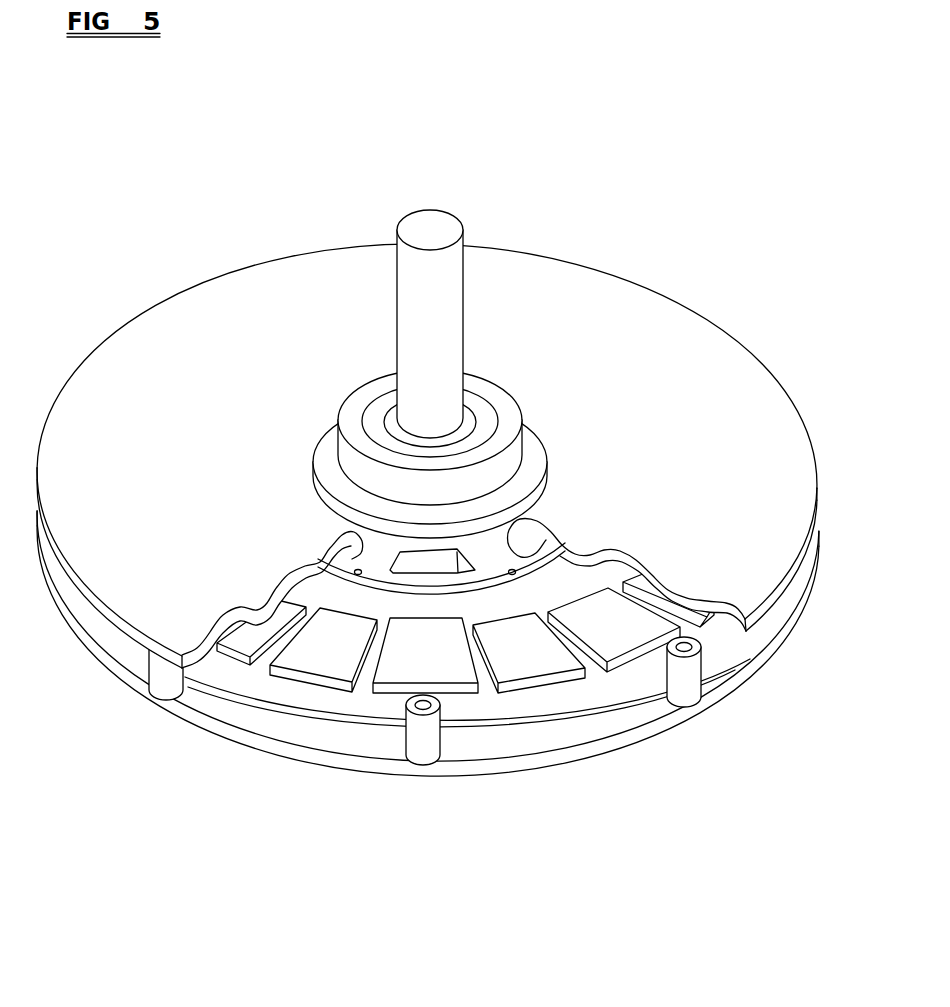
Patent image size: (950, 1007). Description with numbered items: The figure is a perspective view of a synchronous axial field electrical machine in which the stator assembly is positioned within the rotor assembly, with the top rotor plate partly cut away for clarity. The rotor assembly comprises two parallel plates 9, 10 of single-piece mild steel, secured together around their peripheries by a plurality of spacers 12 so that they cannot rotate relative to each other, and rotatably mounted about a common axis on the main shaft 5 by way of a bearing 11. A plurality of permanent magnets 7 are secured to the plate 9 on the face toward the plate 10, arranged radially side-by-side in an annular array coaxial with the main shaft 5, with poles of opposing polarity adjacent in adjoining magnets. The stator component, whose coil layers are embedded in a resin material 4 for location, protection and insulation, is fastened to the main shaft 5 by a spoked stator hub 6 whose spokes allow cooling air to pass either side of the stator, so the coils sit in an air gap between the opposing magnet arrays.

The resin material 4 is at (518, 717).
The main shaft 5 is at (444, 285).
The spoked stator hub 6 is at (538, 560).
The permanent magnets 7 is at (545, 677).
The plate 9 is at (118, 453).
The plate 10 is at (782, 636).
The bearing 11 is at (343, 448).
The spacers 12 is at (165, 679).